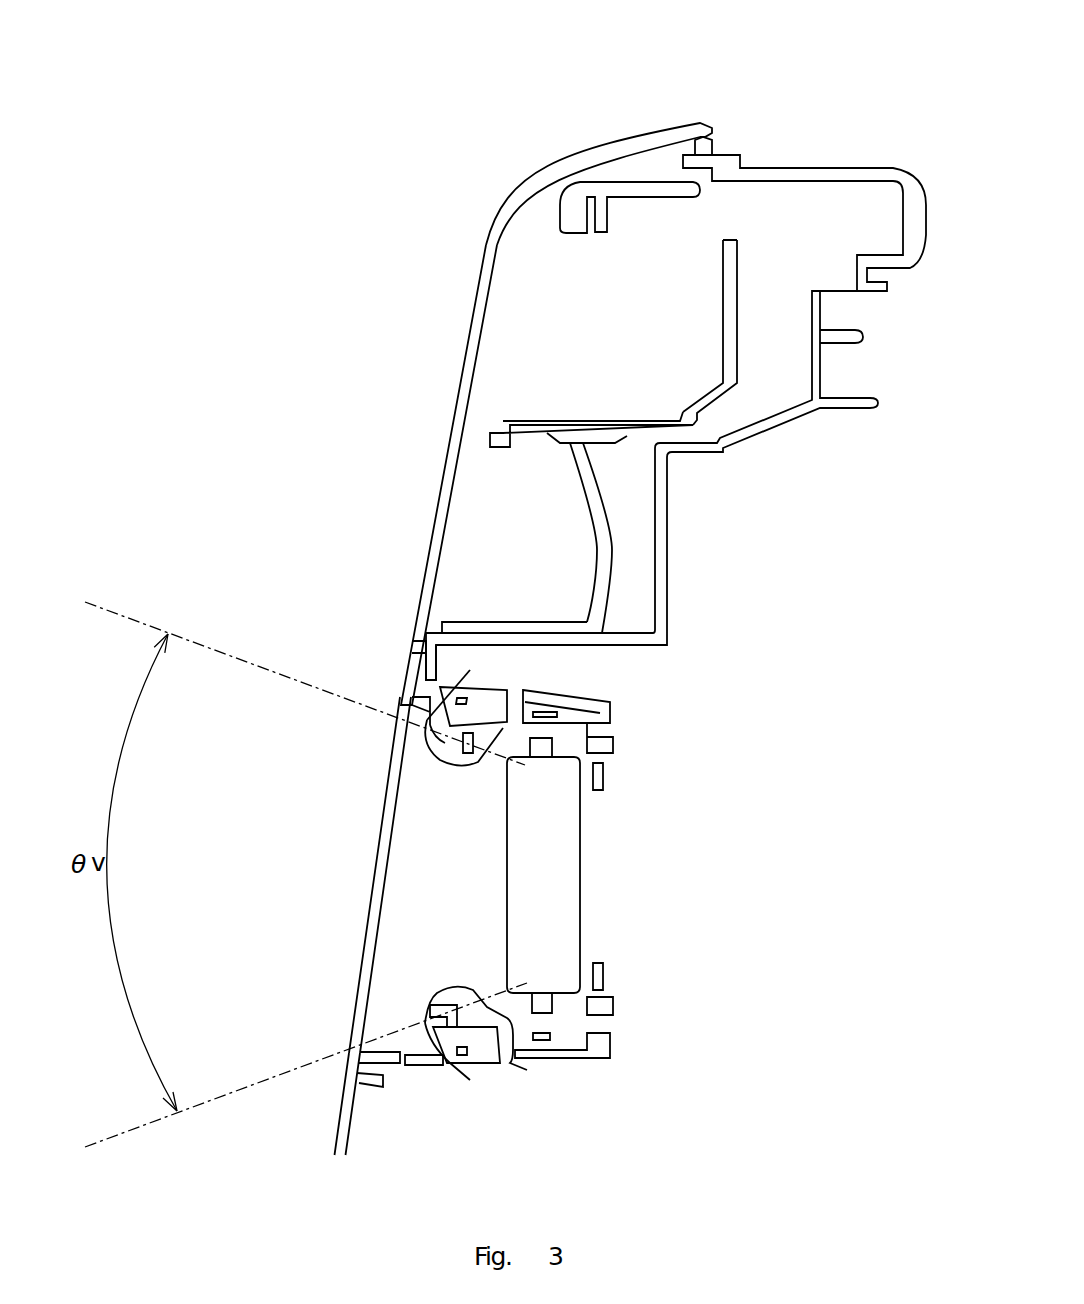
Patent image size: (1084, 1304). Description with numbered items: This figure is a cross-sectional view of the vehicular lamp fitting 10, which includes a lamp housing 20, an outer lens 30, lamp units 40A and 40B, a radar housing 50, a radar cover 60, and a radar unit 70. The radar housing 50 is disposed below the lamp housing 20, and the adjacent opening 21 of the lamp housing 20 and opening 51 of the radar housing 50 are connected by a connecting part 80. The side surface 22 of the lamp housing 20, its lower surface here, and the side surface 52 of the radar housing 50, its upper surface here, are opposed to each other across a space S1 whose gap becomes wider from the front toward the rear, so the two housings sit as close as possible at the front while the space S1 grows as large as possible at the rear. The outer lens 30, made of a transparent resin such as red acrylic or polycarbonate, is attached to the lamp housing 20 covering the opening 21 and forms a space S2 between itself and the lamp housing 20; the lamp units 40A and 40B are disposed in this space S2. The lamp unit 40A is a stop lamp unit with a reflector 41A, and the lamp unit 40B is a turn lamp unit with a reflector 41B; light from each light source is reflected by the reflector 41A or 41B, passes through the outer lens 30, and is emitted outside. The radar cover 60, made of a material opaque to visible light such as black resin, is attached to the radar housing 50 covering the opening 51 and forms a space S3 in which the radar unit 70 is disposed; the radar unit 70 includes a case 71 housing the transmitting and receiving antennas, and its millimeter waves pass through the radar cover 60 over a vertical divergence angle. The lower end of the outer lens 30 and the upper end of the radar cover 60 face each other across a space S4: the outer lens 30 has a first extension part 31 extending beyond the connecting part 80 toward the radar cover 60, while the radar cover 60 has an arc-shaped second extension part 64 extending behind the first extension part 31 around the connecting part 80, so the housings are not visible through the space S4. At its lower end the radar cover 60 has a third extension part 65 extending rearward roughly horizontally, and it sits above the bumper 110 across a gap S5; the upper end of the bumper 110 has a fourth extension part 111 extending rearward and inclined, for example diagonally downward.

The vehicular lamp fitting 10 is at (639, 95).
The lamp housing 20 is at (838, 172).
The opening of the lamp housing 21 is at (446, 647).
The side surface of the lamp housing 22 is at (602, 647).
The outer lens 30 is at (467, 347).
The first extension part 31 is at (405, 698).
The lamp unit 40A is at (655, 302).
The reflector 41A is at (722, 338).
The lamp unit 40B is at (547, 522).
The reflector 41B is at (596, 552).
The radar housing 50 is at (605, 775).
The opening of the radar housing 51 is at (432, 727).
The side surface of the radar housing 52 is at (597, 693).
The radar cover 60 is at (372, 889).
The second extension part 64 is at (426, 700).
The third extension part 65 is at (384, 1053).
The radar unit 70 is at (505, 903).
The case 71 is at (505, 935).
The connecting part 80 is at (418, 647).
The bumper 110 is at (337, 1130).
The fourth extension part 111 is at (372, 1088).
The space S1 is at (575, 678).
The space S2 is at (577, 340).
The space S3 is at (462, 872).
The space S4 is at (400, 690).
The gap S5 is at (348, 1062).